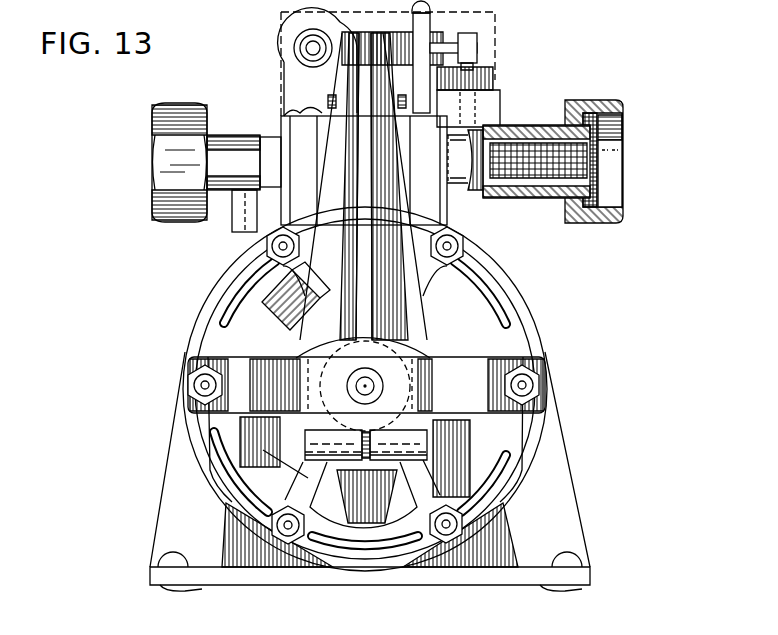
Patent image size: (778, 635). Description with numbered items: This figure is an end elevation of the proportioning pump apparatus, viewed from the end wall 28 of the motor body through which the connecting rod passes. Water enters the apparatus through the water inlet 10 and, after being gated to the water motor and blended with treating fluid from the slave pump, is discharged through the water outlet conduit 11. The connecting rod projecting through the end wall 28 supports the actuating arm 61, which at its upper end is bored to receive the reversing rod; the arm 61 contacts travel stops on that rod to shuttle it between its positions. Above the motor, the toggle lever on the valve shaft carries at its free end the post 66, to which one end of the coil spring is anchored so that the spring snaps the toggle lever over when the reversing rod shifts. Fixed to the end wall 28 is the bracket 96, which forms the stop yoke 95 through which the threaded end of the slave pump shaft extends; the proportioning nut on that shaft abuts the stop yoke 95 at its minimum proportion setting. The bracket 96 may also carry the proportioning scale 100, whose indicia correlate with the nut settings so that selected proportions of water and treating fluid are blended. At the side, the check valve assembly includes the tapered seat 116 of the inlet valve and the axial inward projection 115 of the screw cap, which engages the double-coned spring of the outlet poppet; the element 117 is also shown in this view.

The water inlet 10 is at (526, 132).
The water outlet conduit 11 is at (233, 137).
The end wall 28 is at (453, 308).
The actuating arm 61 is at (385, 210).
The post 66 is at (480, 60).
The stop yoke 95 is at (400, 395).
The bracket 96 is at (477, 353).
The proportioning scale 100 is at (262, 320).
The axial inward projection 115 is at (598, 167).
The tapered seat 116 is at (590, 120).
The cap insert 117 is at (622, 124).